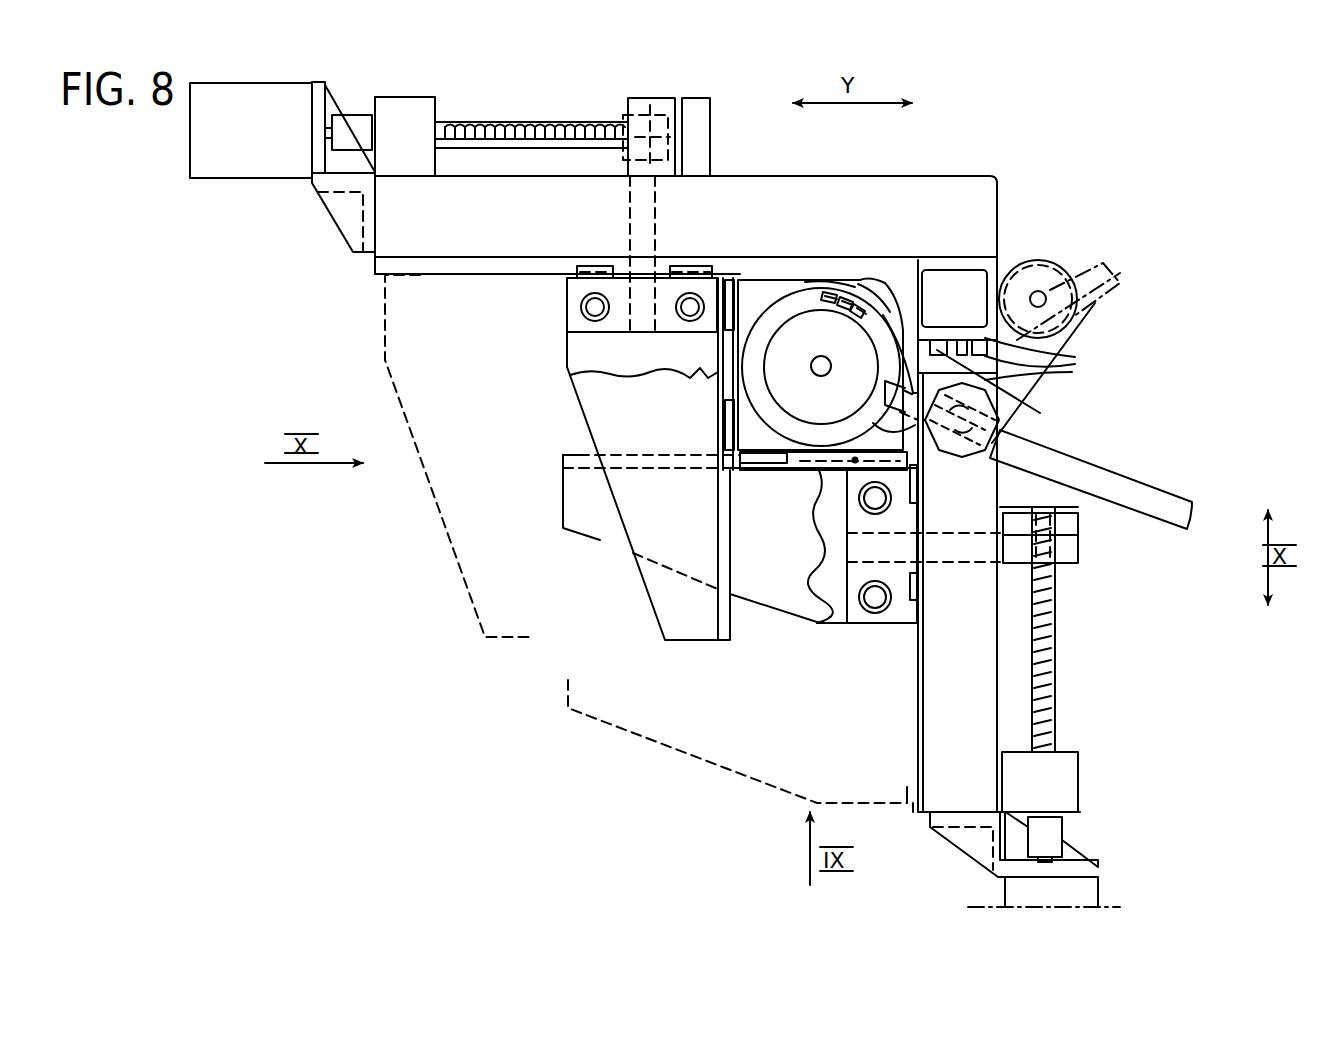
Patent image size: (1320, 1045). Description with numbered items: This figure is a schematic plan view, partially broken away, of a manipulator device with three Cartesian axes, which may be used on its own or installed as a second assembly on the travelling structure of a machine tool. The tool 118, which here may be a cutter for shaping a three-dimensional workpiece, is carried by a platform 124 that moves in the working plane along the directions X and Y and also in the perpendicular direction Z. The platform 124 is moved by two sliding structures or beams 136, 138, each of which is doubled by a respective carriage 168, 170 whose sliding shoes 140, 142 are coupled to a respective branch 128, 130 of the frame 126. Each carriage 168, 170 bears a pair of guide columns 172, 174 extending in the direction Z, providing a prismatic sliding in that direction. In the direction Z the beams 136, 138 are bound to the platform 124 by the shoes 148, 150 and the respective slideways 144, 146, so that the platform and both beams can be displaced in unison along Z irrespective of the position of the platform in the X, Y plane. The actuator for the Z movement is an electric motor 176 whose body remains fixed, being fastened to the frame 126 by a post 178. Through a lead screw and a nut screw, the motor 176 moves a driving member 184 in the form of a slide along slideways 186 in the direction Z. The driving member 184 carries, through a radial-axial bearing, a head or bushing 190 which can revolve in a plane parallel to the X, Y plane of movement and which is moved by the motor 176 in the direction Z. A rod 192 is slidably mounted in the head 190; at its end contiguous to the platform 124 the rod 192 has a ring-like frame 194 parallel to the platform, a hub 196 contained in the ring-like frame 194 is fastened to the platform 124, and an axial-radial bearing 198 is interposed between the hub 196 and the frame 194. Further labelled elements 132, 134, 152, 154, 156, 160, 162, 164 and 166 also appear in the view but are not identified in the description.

The tool 118 is at (816, 361).
The platform 124 is at (884, 293).
The frame 126 is at (1000, 222).
The branch of the frame 128 is at (985, 617).
The branch of the frame 130 is at (772, 205).
The column 132 is at (916, 725).
The mounting plate 134 is at (434, 266).
The beam 136 is at (595, 525).
The beam 138 is at (600, 403).
The sliding shoes 140 is at (922, 502).
The sliding shoes 142 is at (577, 270).
The slideway 144 is at (578, 449).
The slideway 146 is at (728, 623).
The shoe 148 is at (855, 460).
The shoe 150 is at (735, 285).
The base 152 is at (1087, 890).
The adjustment screw 154 is at (1045, 670).
The nut block 156 is at (1055, 552).
The motor 160 is at (205, 133).
The lead screw 162 is at (512, 125).
The nut 164 is at (676, 112).
The shaft 166 is at (627, 215).
The carriage 168 is at (870, 618).
The carriage 170 is at (617, 322).
The guide columns 172 is at (866, 590).
The guide columns 174 is at (580, 305).
The motor 176 is at (1045, 272).
The post 178 is at (950, 265).
The driving member 184 is at (1075, 357).
The slideways 186 is at (1035, 390).
The head 190 is at (1037, 440).
The rod 192 is at (1167, 497).
The ring-like frame 194 is at (810, 280).
The hub 196 is at (838, 290).
The axial-radial bearing 198 is at (858, 285).